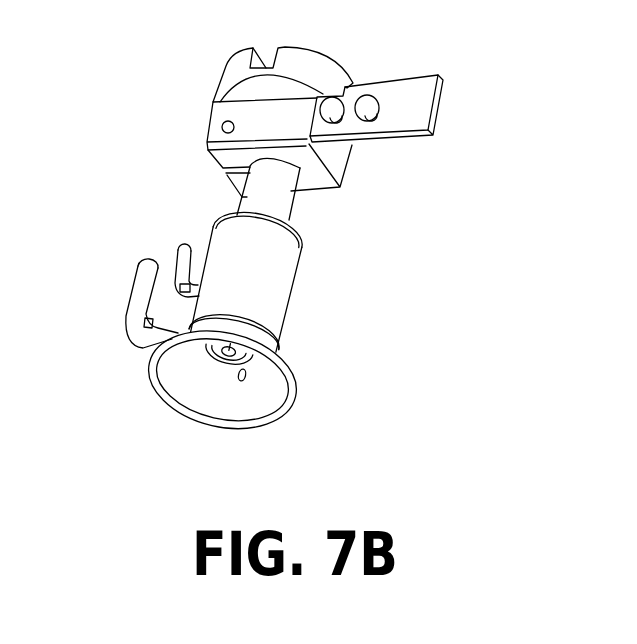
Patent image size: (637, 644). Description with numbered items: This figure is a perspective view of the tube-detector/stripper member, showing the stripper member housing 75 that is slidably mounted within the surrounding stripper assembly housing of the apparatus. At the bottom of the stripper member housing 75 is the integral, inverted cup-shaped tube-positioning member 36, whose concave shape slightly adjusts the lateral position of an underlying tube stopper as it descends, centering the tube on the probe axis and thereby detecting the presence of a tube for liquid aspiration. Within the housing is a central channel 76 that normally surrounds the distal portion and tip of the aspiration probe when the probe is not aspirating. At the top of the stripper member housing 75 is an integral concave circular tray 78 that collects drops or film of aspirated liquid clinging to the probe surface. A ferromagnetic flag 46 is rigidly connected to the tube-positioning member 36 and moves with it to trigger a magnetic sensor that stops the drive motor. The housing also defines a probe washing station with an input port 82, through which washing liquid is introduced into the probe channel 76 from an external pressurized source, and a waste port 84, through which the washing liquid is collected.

The tube-positioning member 36 is at (295, 372).
The flag 46 is at (402, 120).
The stripper member housing 75 is at (314, 264).
The central channel 76 is at (228, 355).
The concave circular tray 78 is at (230, 74).
The input port 82 is at (182, 255).
The waste port 84 is at (138, 282).